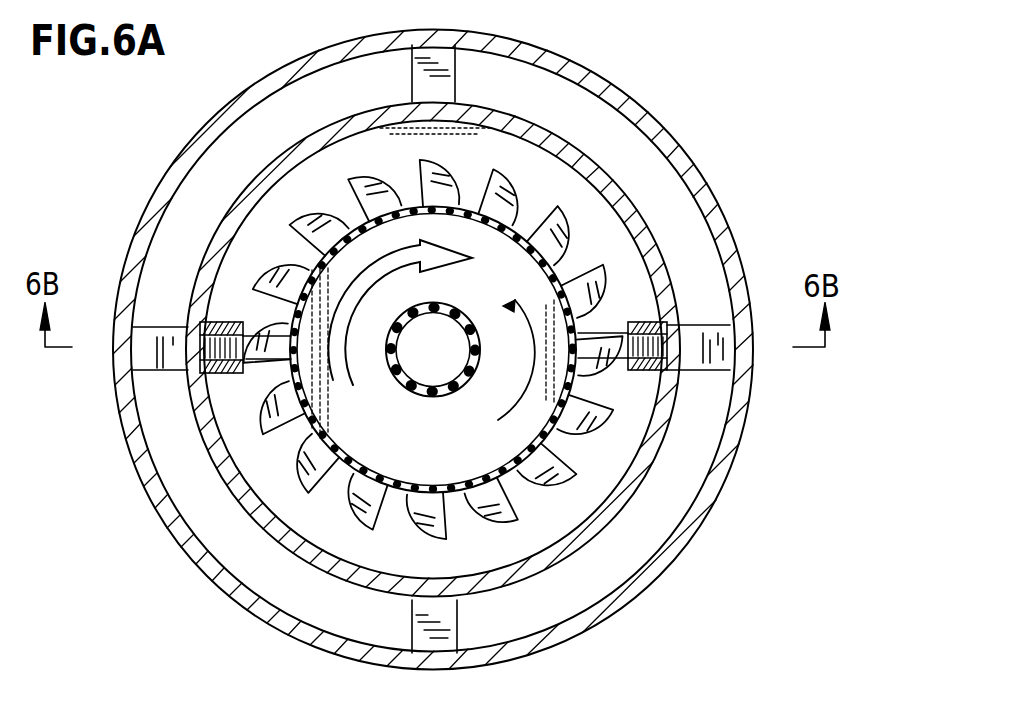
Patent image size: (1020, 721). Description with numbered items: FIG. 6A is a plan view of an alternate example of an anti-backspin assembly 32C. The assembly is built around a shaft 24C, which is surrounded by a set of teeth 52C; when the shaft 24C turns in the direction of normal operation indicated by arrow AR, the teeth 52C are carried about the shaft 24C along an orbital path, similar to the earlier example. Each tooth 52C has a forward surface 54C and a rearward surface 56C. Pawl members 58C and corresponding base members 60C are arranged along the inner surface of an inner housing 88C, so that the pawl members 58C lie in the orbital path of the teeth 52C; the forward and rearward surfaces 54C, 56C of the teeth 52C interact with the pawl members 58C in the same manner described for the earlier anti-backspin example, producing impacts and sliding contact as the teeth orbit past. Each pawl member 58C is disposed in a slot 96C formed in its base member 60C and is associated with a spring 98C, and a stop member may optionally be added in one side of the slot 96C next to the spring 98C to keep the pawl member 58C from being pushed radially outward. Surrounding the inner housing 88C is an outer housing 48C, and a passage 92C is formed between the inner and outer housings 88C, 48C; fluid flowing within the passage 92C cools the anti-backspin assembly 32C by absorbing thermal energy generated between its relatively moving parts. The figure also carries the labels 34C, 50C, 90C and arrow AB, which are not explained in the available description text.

The shaft 24C is at (405, 378).
The anti-backspin assembly 32C is at (745, 108).
The rotor hub 34C is at (466, 178).
The outer housing 48C is at (630, 600).
The pumping chamber 50C is at (330, 418).
The teeth 52C is at (306, 206).
The forward surfaces 54C is at (358, 505).
The rearward surfaces 56C is at (392, 515).
The pawl members 58C is at (618, 367).
The base members 60C is at (655, 303).
The inner housing 88C is at (627, 507).
The inlet channel 90C is at (153, 350).
The passage 92C is at (607, 132).
The slot 96C is at (272, 338).
The spring 98C is at (667, 342).
The arrow indicating direction of normal rotation AR is at (345, 295).
The flow direction arrow AB is at (505, 410).